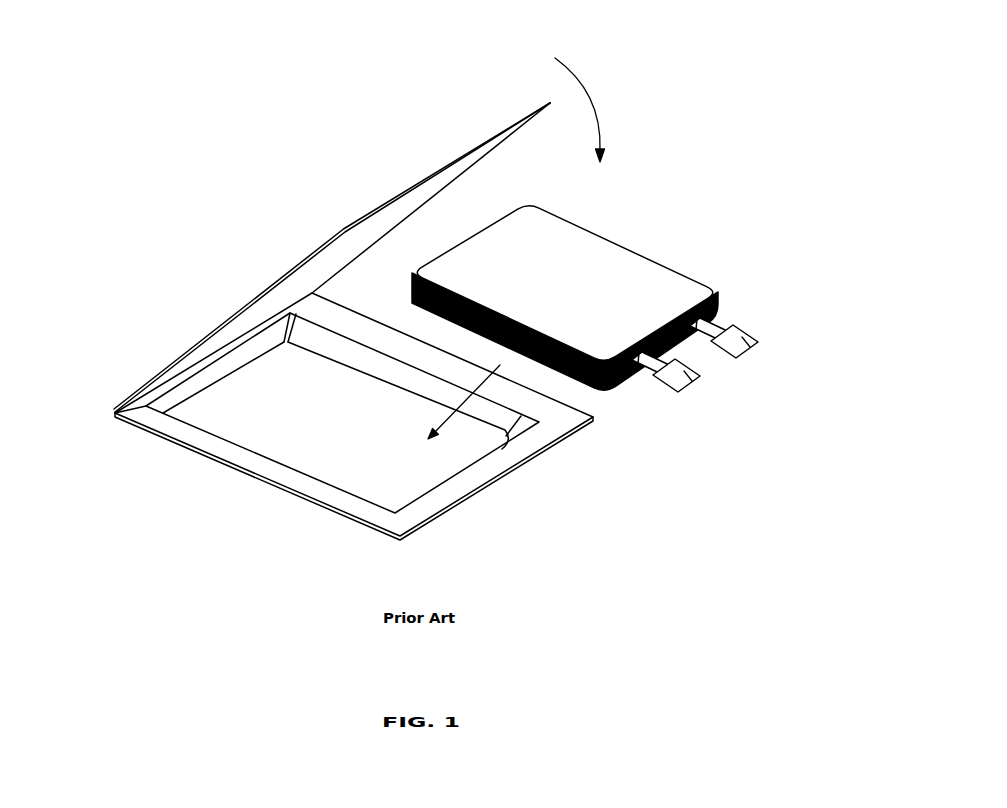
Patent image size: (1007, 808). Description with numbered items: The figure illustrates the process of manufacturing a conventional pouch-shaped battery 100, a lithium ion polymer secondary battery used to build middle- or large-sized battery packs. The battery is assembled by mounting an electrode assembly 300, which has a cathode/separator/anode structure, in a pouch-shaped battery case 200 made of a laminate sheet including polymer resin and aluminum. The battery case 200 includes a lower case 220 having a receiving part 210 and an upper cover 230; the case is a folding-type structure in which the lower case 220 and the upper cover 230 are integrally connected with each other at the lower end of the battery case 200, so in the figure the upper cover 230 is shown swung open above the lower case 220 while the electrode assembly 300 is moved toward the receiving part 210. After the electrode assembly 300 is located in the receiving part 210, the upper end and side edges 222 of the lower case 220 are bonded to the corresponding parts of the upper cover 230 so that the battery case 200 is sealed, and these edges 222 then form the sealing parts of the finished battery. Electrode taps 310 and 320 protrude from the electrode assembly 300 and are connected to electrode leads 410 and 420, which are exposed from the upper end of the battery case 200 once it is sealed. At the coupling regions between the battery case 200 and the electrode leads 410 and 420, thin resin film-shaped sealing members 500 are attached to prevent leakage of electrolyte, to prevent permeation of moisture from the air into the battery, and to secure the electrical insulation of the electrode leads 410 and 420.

The pouch-shaped battery 100 is at (141, 59).
The battery case 200 is at (196, 287).
The receiving part 210 is at (419, 483).
The lower case 220 is at (300, 497).
The upper end and side edges 222 is at (218, 446).
The upper cover 230 is at (380, 206).
The electrode assembly 300 is at (640, 254).
The electrode tap 310 is at (641, 378).
The electrode tap 320 is at (718, 300).
The electrode lead 410 is at (690, 390).
The electrode lead 420 is at (759, 342).
The sealing member 500 is at (700, 382).